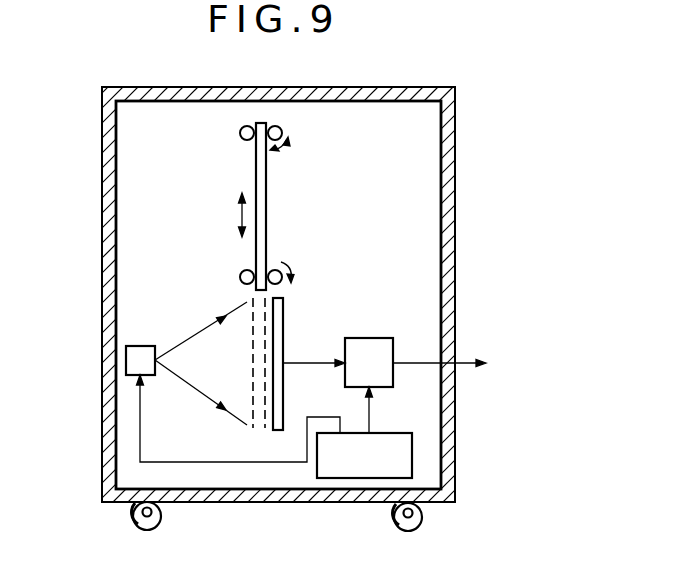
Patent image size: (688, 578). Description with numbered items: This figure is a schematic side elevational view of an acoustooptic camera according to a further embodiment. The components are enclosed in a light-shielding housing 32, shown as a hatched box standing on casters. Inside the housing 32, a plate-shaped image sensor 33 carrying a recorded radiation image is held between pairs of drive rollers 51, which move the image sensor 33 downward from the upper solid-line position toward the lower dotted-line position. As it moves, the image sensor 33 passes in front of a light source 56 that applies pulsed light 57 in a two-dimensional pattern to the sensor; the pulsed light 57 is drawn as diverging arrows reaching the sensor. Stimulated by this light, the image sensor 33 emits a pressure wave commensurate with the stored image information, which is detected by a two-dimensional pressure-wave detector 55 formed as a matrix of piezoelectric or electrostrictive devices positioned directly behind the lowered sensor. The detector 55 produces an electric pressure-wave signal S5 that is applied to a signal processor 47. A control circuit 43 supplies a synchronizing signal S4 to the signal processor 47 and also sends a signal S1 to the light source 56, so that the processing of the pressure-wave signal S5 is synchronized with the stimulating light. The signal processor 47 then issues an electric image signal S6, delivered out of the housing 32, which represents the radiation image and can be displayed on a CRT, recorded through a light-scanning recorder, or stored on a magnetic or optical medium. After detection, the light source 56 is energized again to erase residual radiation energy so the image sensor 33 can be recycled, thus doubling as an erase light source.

The light-shielding housing 32 is at (102, 305).
The image sensor 33 is at (262, 213).
The drive rollers 51 is at (283, 130).
The two-dimensional pressure-wave detector 55 is at (285, 316).
The light source 56 is at (146, 346).
The pulsed light 57 is at (198, 394).
The signal processor 47 is at (378, 338).
The control circuit 43 is at (379, 468).
The drive signal S1 is at (192, 444).
The synchronizing signal S4 is at (370, 413).
The pressure-wave signal S5 is at (310, 362).
The image signal S6 is at (456, 365).